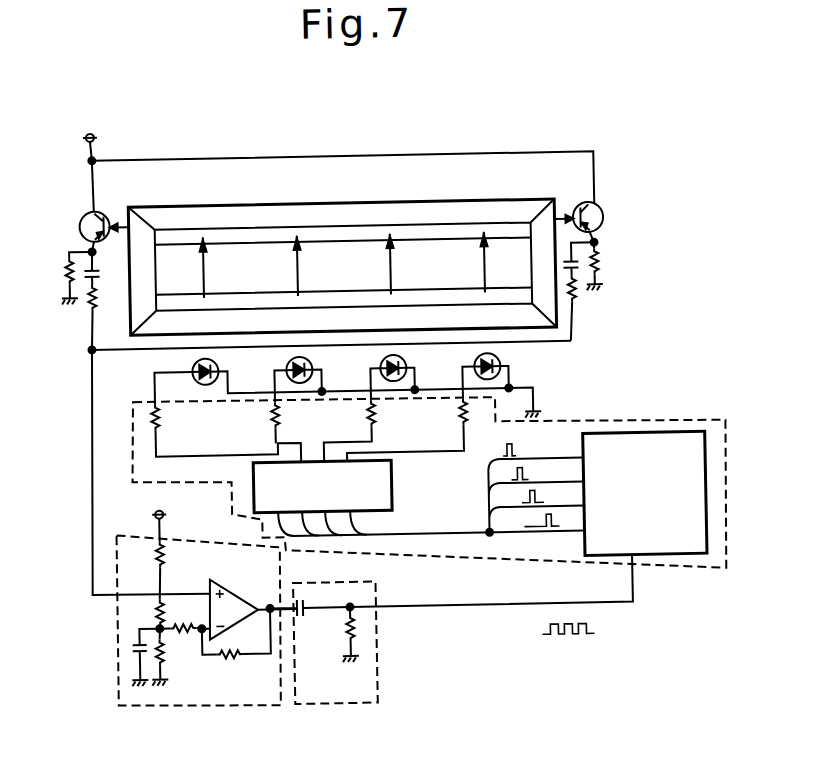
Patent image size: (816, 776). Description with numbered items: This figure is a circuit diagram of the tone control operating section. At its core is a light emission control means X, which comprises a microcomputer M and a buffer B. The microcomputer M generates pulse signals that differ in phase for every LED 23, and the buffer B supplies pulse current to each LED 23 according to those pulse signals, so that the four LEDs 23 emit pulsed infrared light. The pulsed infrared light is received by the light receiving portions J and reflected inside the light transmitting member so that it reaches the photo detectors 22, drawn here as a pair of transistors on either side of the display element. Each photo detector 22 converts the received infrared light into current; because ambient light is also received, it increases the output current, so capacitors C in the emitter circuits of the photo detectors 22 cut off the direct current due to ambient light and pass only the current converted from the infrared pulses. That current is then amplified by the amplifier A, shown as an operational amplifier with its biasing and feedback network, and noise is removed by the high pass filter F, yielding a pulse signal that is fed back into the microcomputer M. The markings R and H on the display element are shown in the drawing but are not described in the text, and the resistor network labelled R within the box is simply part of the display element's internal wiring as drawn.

The photo detector 22 is at (85, 216).
The LED 23 is at (220, 366).
The light receiving portion J is at (206, 234).
The resistive element R is at (209, 269).
The lead terminal H is at (206, 294).
The capacitor C is at (103, 264).
The buffer B is at (390, 500).
The microcomputer M is at (700, 511).
The light emission control means X is at (724, 444).
The amplifier A is at (226, 703).
The high pass filter F is at (372, 670).